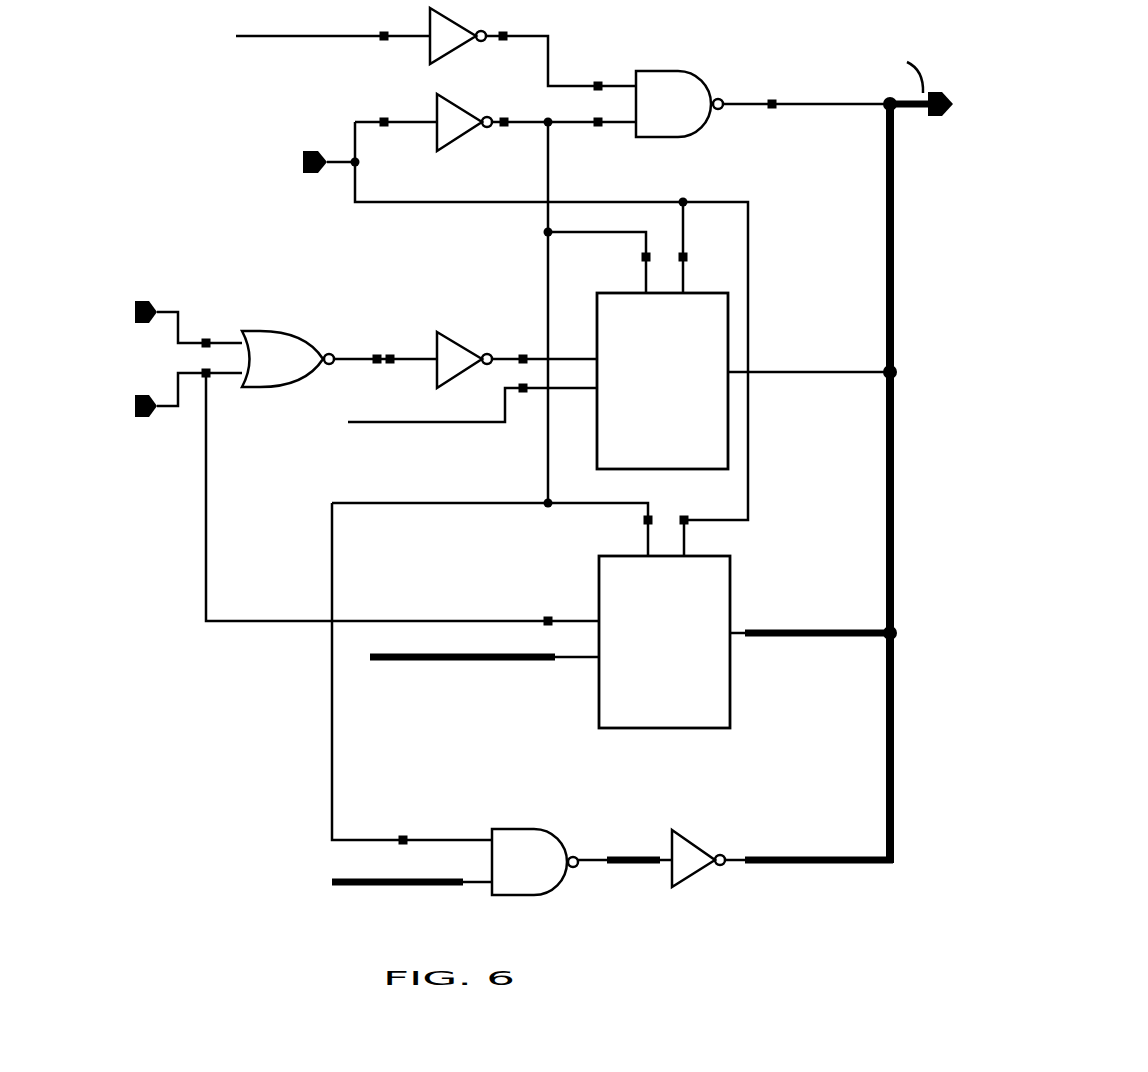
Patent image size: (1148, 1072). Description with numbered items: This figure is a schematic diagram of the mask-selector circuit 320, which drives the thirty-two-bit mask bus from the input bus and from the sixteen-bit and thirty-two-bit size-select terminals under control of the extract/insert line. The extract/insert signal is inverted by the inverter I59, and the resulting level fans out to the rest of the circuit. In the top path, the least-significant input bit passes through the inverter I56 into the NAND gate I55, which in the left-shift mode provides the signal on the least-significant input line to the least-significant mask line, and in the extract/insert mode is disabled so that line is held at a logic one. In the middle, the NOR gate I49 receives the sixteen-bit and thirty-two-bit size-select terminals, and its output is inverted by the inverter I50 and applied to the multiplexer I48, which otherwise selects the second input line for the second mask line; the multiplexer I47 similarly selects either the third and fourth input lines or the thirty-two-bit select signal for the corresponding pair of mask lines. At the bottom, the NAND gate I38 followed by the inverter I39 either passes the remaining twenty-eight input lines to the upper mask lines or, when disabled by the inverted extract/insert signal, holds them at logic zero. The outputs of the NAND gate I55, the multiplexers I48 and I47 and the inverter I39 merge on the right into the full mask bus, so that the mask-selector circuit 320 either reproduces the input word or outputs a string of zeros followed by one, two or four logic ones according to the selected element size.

The mask-selector circuit 320 is at (160, 608).
The inverter I56 is at (459, 42).
The inverter I59 is at (465, 128).
The NAND gate I55 is at (697, 104).
The NOR gate I49 is at (292, 372).
The inverter I50 is at (464, 368).
The multiplexer I48 is at (680, 446).
The multiplexer I47 is at (662, 728).
The NAND gate I38 is at (520, 829).
The inverter I39 is at (700, 873).